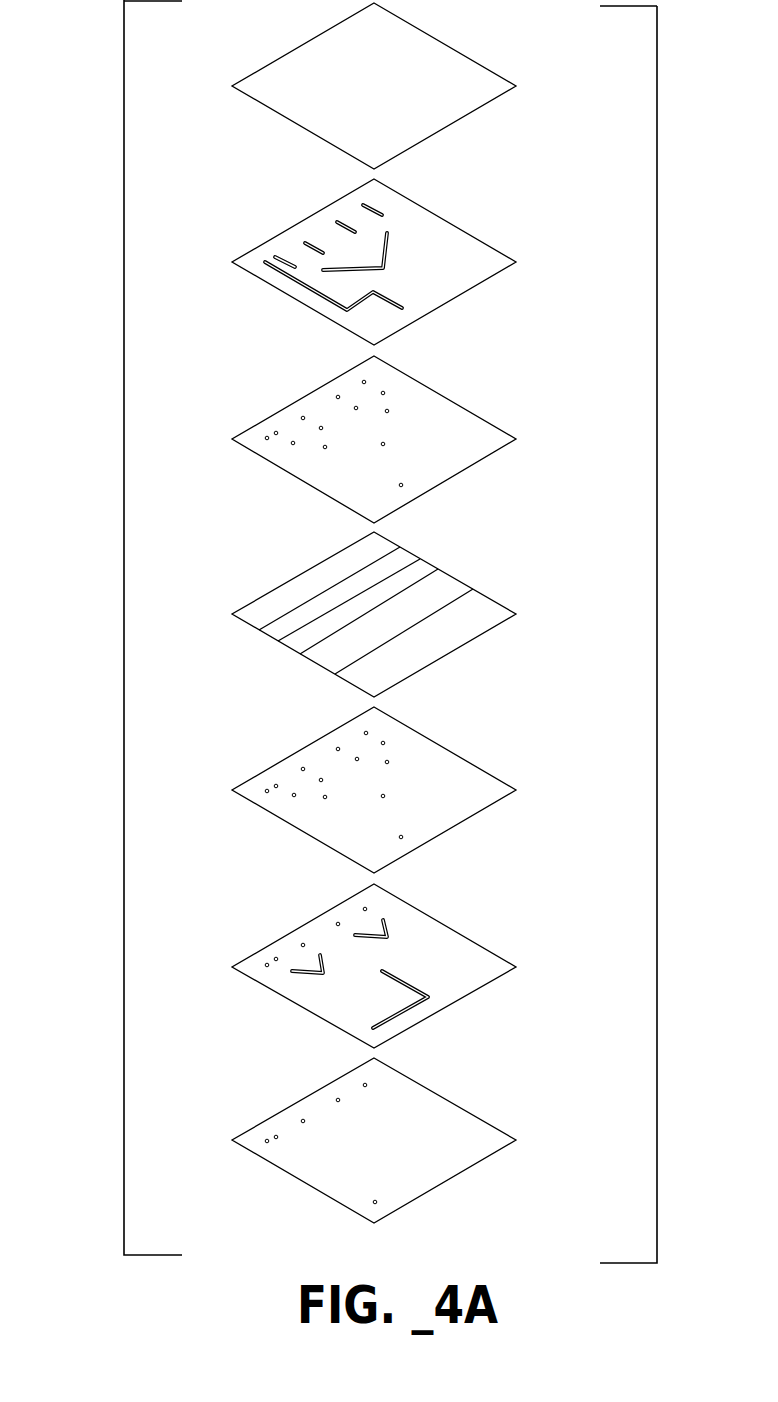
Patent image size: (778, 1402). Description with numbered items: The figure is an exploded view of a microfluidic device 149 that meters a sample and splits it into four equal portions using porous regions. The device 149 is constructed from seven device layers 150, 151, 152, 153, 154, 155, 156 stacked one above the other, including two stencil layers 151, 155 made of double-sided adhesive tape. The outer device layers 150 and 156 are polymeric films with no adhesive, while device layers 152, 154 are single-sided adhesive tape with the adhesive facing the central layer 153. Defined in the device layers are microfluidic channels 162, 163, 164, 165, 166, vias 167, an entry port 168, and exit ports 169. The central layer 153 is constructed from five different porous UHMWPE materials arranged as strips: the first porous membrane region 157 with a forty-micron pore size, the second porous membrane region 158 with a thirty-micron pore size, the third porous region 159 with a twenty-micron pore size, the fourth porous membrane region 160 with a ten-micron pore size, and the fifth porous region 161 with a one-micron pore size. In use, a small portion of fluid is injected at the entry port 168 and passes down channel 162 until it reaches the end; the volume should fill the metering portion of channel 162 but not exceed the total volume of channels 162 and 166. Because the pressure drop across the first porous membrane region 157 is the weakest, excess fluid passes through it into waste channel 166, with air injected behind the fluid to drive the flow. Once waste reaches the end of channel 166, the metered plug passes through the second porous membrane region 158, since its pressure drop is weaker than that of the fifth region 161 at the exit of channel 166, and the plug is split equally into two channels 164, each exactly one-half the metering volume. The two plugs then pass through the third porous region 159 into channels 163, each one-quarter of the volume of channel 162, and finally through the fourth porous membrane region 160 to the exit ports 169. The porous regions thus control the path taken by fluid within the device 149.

The microfluidic device 149 is at (123, 666).
The device layer 150 is at (490, 1133).
The stencil layer 151 is at (502, 967).
The device layer 152 is at (495, 787).
The central layer 153 is at (492, 615).
The device layer 154 is at (492, 432).
The stencil layer 155 is at (492, 262).
The device layer 156 is at (497, 83).
The first porous membrane region 157 is at (363, 677).
The second porous membrane region 158 is at (450, 582).
The third porous region 159 is at (303, 637).
The fourth porous membrane region 160 is at (336, 595).
The fifth porous region 161 is at (362, 552).
The channel 162 is at (404, 979).
The channels 163 is at (390, 923).
The channels 164 is at (389, 249).
The microfluidic channel 165 is at (302, 242).
The waste channel 166 is at (302, 283).
The vias 167 is at (303, 416).
The entry port 168 is at (375, 1204).
The exit ports 169 is at (303, 1119).